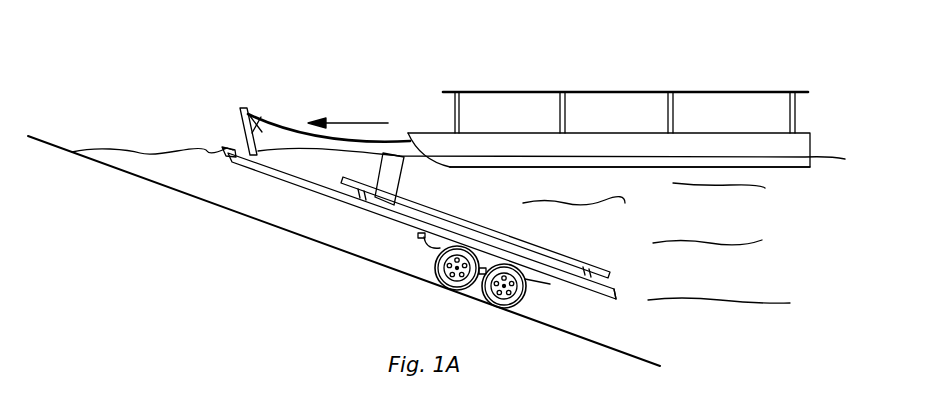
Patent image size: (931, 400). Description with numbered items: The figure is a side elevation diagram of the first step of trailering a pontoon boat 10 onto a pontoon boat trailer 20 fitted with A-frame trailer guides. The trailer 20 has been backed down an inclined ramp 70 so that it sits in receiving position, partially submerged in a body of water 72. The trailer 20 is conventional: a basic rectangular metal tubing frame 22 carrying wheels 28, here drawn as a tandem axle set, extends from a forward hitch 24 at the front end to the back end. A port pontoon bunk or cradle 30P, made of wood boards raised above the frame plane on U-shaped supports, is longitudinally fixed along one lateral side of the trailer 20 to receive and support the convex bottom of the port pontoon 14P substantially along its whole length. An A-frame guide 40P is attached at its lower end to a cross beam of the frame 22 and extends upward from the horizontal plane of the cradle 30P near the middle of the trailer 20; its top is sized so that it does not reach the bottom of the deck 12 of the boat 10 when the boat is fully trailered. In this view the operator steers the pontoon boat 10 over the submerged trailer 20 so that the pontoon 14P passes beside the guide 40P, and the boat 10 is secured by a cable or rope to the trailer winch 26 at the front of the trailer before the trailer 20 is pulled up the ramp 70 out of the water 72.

The pontoon boat 10 is at (609, 111).
The deck 12 is at (437, 132).
The port pontoon 14P is at (785, 165).
The pontoon boat trailer 20 is at (616, 284).
The frame 22 is at (596, 293).
The forward hitch 24 is at (230, 148).
The trailer winch 26 is at (258, 113).
The wheels 28 is at (440, 282).
The port pontoon bunk or cradle 30P is at (562, 252).
The A-frame guide 40P is at (392, 182).
The inclined ramp 70 is at (45, 137).
The body of water 72 is at (172, 152).